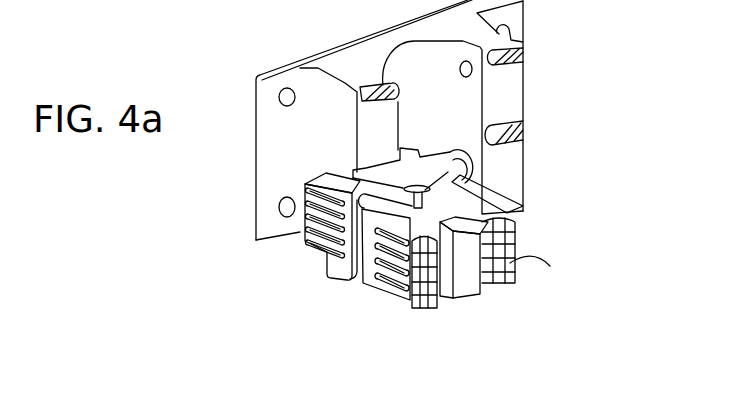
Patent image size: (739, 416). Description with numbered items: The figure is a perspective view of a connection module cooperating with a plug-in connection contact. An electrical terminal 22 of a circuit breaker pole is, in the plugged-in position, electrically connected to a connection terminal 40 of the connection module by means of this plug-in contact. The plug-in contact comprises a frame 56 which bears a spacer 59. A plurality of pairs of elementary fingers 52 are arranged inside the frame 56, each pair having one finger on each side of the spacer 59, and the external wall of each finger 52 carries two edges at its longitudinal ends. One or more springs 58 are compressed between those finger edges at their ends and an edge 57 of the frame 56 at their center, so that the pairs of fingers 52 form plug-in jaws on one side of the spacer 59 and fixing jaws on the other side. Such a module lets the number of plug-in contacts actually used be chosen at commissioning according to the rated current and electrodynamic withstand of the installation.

The electrical terminal 22 is at (470, 280).
The connection terminal 40 is at (528, 92).
The elementary finger 52 is at (422, 292).
The frame 56 is at (400, 175).
The edge of the frame 57 is at (348, 282).
The spring 58 is at (315, 250).
The spacer 59 is at (448, 172).